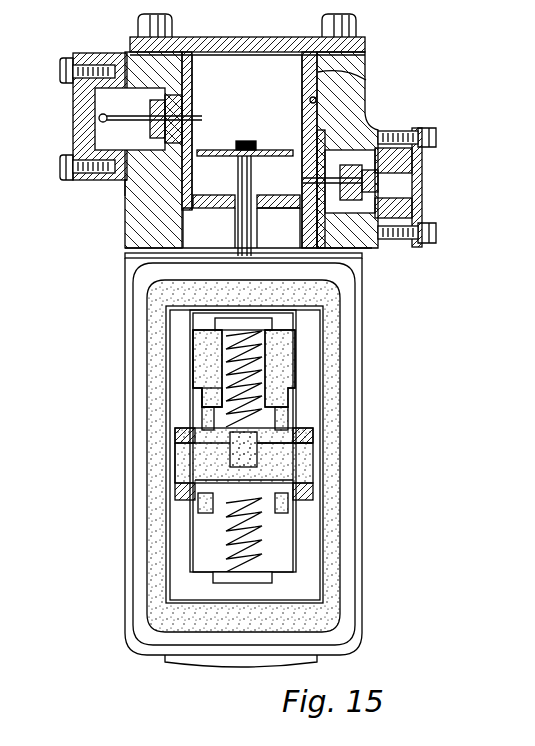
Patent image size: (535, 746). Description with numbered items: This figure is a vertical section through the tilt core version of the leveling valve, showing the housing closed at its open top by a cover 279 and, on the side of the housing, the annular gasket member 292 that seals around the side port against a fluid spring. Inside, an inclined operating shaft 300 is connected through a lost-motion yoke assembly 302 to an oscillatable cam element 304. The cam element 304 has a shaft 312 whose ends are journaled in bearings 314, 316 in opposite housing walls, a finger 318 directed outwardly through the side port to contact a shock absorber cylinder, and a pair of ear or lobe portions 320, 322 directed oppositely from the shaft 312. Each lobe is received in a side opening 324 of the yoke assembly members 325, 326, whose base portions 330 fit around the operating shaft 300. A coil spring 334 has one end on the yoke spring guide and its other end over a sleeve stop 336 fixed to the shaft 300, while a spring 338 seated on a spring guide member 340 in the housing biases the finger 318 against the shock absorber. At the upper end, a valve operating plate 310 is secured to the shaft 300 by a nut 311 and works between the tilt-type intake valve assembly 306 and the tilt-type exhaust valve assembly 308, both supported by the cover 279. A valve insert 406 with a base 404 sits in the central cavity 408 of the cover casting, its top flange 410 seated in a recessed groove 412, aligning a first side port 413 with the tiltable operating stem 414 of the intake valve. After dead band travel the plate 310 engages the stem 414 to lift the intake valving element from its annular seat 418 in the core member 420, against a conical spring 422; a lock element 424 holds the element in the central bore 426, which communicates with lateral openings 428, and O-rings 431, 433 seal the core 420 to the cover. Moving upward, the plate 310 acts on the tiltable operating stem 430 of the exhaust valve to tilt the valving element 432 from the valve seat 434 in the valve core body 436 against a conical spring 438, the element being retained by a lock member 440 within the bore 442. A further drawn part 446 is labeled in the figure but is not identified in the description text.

The cover 279 is at (145, 229).
The annular gasket member 292 is at (158, 622).
The operating shaft 300 is at (226, 542).
The lost-motion yoke assembly 302 is at (284, 358).
The cam element 304 is at (258, 465).
The tilt-type intake valve assembly 306 is at (306, 149).
The tilt-type exhaust valve assembly 308 is at (165, 80).
The valve operating plate 310 is at (221, 158).
The nut 311 is at (251, 140).
The shaft 312 is at (309, 481).
The bearing 314 is at (292, 444).
The bearing 316 is at (177, 494).
The finger 318 is at (222, 497).
The ear or lobe portion 320 is at (177, 433).
The ear or lobe portion 322 is at (280, 427).
The side opening 324 is at (286, 414).
The yoke assembly member 325 is at (272, 376).
The yoke assembly member 326 is at (215, 345).
The base portion 330 is at (222, 437).
The coil spring 334 is at (234, 333).
The sleeve stop 336 is at (226, 405).
The spring 338 is at (250, 512).
The spring guide member 340 is at (243, 456).
The base 404 is at (262, 232).
The valve insert 406 is at (298, 68).
The central cavity 408 is at (330, 100).
The top flange 410 is at (350, 55).
The recessed groove 412 is at (355, 76).
The first side port 413 is at (198, 210).
The tiltable operating stem 414 is at (262, 214).
The annular seat 418 is at (319, 156).
The core member 420 is at (372, 246).
The conical spring 422 is at (395, 160).
The lock element 424 is at (350, 165).
The central bore 426 is at (310, 180).
The lateral opening 428 is at (380, 185).
The tiltable operating stem 430 is at (205, 124).
The O-ring 431 is at (358, 258).
The valving element 432 is at (167, 115).
The O-ring 433 is at (405, 212).
The valve seat 434 is at (130, 174).
The valve core body 436 is at (88, 129).
The conical spring 438 is at (98, 118).
The lock member 440 is at (150, 90).
The bore 442 is at (95, 106).
The chamber plate 446 is at (245, 146).